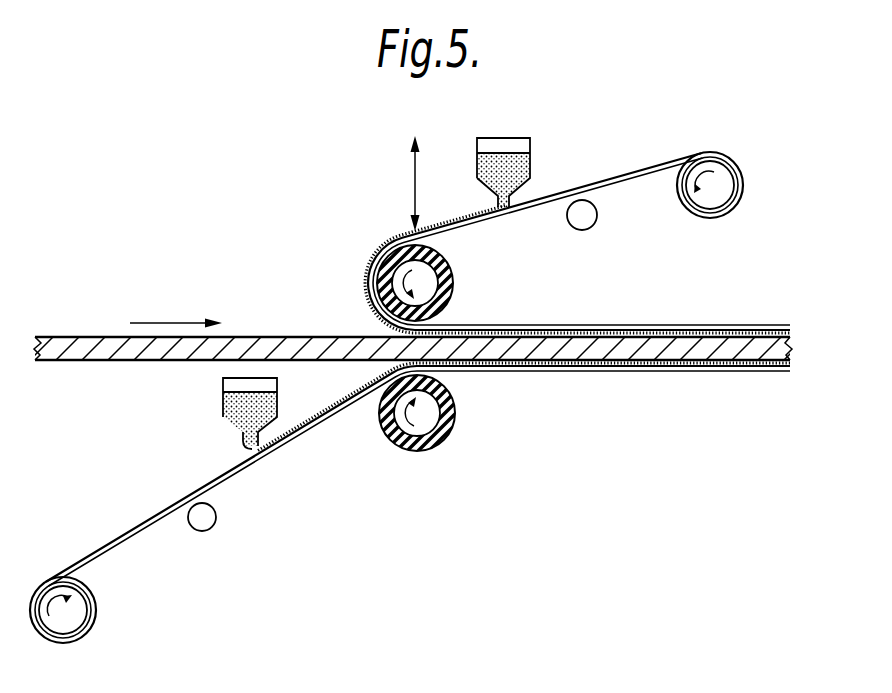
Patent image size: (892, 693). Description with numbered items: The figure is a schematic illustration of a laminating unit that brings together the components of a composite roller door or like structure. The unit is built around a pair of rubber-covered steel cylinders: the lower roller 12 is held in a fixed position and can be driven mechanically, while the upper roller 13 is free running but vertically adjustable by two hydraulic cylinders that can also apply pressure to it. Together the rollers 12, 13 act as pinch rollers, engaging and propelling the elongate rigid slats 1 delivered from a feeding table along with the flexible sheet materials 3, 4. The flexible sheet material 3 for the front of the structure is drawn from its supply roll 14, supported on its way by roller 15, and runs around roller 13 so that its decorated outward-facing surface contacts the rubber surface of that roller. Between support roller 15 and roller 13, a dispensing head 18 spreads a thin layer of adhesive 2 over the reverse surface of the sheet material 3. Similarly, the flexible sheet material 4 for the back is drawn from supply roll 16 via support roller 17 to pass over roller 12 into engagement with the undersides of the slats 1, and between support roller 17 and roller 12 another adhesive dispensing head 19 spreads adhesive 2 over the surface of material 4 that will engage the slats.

The rigid slats 1 is at (748, 350).
The adhesive 2 is at (452, 222).
The flexible sheet material for the front 3 is at (655, 164).
The flexible sheet material for the back 4 is at (138, 525).
The rubber-covered steel cylinder 12 is at (430, 413).
The rubber-covered steel cylinder 13 is at (427, 283).
The supply roll 14 is at (728, 187).
The support roller 15 is at (588, 226).
The supply roll 16 is at (77, 607).
The support roller 17 is at (210, 521).
The dispensing head 18 is at (508, 143).
The adhesive dispensing head 19 is at (233, 385).